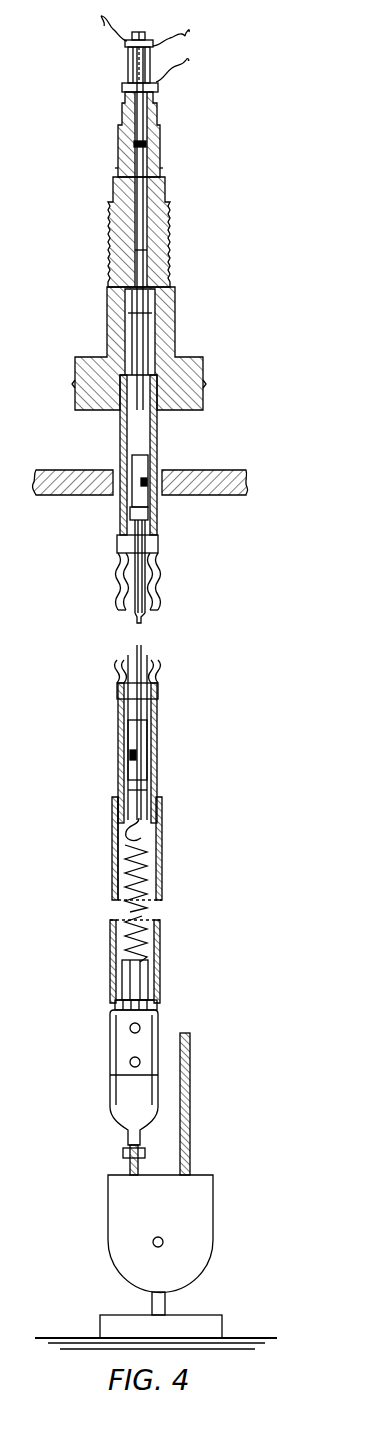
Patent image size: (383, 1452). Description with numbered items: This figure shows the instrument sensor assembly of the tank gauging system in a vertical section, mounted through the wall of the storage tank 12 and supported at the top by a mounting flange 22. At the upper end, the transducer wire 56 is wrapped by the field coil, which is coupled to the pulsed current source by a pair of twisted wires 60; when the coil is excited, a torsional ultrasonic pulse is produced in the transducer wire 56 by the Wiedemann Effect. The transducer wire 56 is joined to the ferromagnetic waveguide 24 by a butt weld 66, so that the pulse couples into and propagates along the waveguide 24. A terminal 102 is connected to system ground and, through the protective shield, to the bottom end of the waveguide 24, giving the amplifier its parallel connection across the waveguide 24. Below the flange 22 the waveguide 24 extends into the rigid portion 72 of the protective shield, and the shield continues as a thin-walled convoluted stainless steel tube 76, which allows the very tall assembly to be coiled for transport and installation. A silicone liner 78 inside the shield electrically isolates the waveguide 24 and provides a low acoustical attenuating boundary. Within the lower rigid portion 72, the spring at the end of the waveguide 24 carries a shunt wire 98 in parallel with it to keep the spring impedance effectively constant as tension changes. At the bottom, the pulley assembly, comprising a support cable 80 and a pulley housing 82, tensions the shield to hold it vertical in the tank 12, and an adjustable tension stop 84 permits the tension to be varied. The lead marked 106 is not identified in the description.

The storage tank 12 is at (220, 470).
The mounting flange 22 is at (90, 358).
The ferromagnetic waveguide 24 is at (165, 250).
The transducer wire 56 is at (157, 122).
The pair of twisted wires 60 is at (186, 33).
The butt weld 66 is at (128, 144).
The rigid portion of the protective shield 72 is at (157, 514).
The convoluted stainless steel tube 76 is at (117, 577).
The silicone liner 78 is at (146, 617).
The support cable 80 is at (192, 1102).
The pulley housing 82 is at (108, 1232).
The adjustable tension stop 84 is at (123, 1152).
The shunt wire 98 is at (143, 848).
The terminal 102 is at (188, 60).
The cable 106 is at (104, 26).